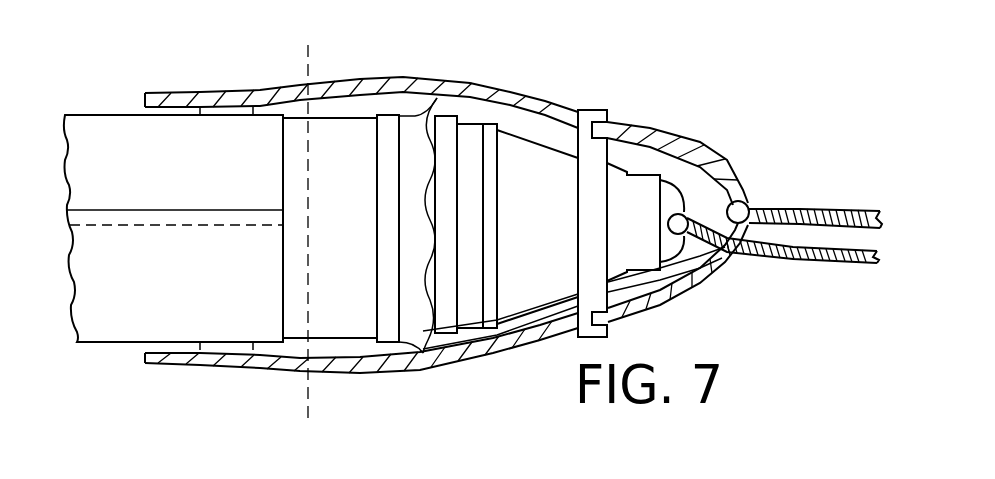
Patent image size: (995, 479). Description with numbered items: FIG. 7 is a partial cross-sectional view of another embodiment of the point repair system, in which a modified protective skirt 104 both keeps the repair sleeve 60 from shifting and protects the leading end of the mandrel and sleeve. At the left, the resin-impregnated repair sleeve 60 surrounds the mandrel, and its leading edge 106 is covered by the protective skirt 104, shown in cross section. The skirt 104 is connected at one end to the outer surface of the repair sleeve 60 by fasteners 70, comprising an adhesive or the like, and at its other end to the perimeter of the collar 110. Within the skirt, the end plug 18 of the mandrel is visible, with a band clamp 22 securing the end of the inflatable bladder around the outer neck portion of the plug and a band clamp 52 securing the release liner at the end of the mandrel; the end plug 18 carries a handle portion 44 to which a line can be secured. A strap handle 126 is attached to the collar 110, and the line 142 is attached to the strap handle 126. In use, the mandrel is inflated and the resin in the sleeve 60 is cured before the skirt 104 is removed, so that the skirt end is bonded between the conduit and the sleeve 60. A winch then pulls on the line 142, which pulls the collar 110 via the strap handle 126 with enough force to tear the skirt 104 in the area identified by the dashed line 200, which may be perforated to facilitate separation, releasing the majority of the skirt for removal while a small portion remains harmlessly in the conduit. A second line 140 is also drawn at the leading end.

The end plug 18 is at (535, 148).
The band clamp 22 is at (457, 120).
The handle portion 44 is at (670, 190).
The band clamp 52 is at (373, 360).
The repair sleeve 60 is at (122, 327).
The fastener 70 is at (222, 98).
The protective skirt 104 is at (362, 80).
The leading edge 106 is at (282, 305).
The collar 110 is at (590, 108).
The strap handle 126 is at (748, 205).
The lower cable 140 is at (795, 262).
The line 142 is at (826, 212).
The dashed line 200 is at (308, 55).